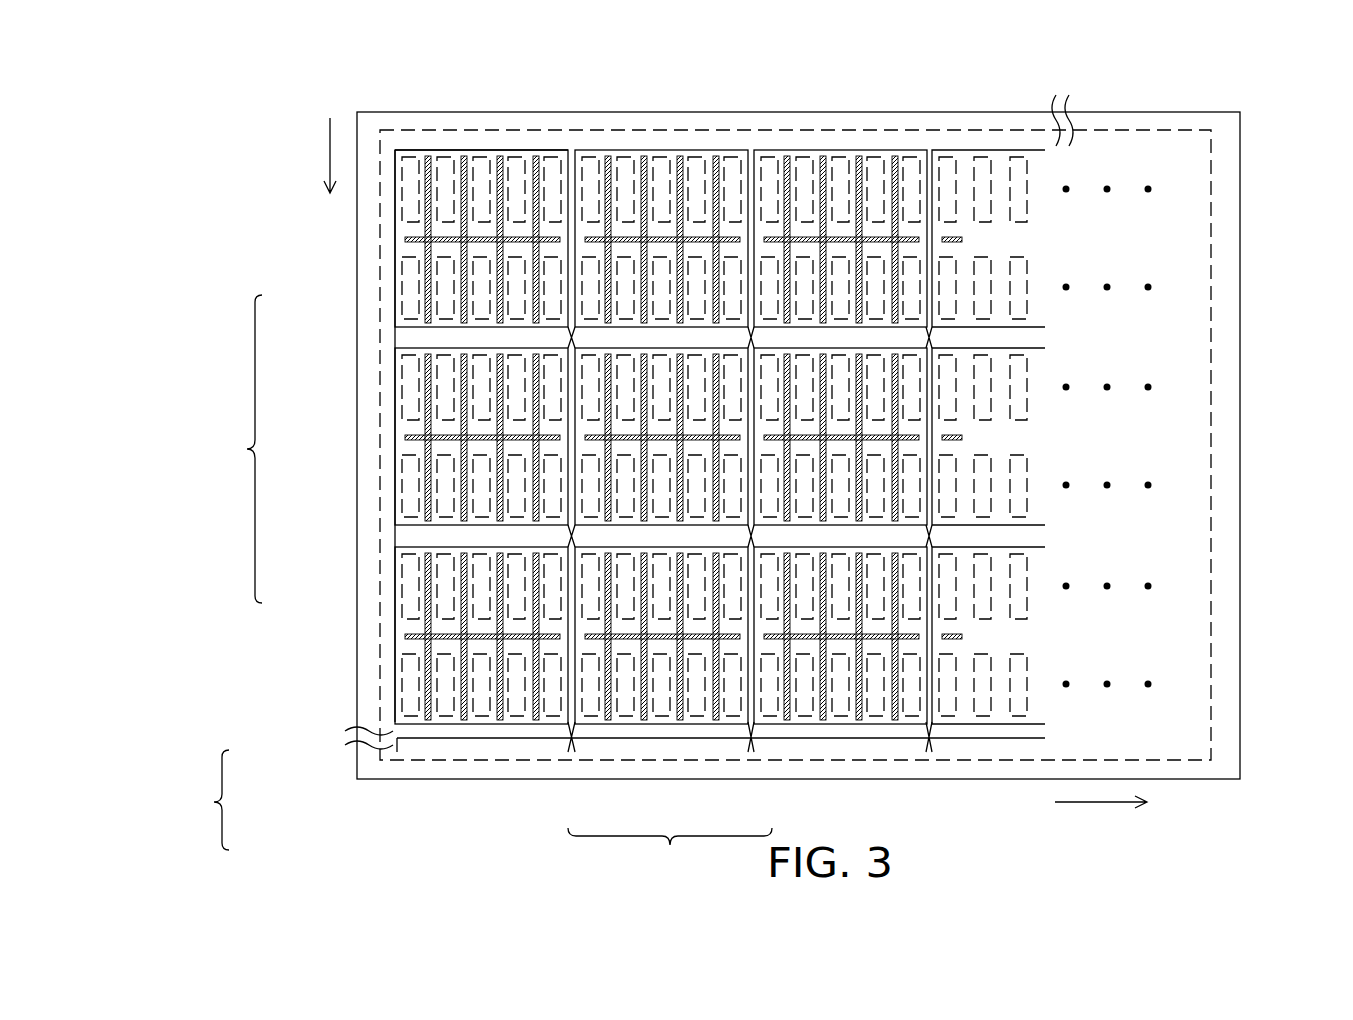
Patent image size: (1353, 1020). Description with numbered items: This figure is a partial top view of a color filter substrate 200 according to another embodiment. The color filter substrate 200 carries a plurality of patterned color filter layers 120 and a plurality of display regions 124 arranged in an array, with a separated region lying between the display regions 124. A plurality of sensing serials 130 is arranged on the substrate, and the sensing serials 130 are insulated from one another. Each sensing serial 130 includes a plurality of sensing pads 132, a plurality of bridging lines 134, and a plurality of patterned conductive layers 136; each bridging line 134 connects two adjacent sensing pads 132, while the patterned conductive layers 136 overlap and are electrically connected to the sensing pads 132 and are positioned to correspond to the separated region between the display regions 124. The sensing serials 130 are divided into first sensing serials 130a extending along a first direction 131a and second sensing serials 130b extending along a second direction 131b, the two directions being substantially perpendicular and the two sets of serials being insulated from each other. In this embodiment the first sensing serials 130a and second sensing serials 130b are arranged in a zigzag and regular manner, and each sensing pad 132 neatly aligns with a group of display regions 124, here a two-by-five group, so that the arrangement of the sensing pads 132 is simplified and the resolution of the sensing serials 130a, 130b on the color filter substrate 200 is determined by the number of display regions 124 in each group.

The patterned color filter layer 120 is at (400, 147).
The display region 124 is at (419, 146).
The sensing serial 130 is at (203, 800).
The first sensing serial 130a is at (232, 535).
The second sensing serial 130b is at (502, 853).
The first direction 131a is at (330, 152).
The second direction 131b is at (1100, 802).
The sensing pad 132 is at (397, 273).
The bridging line 134 is at (570, 330).
The patterned conductive layer 136 is at (428, 307).
The color filter substrate 200 is at (1345, 862).